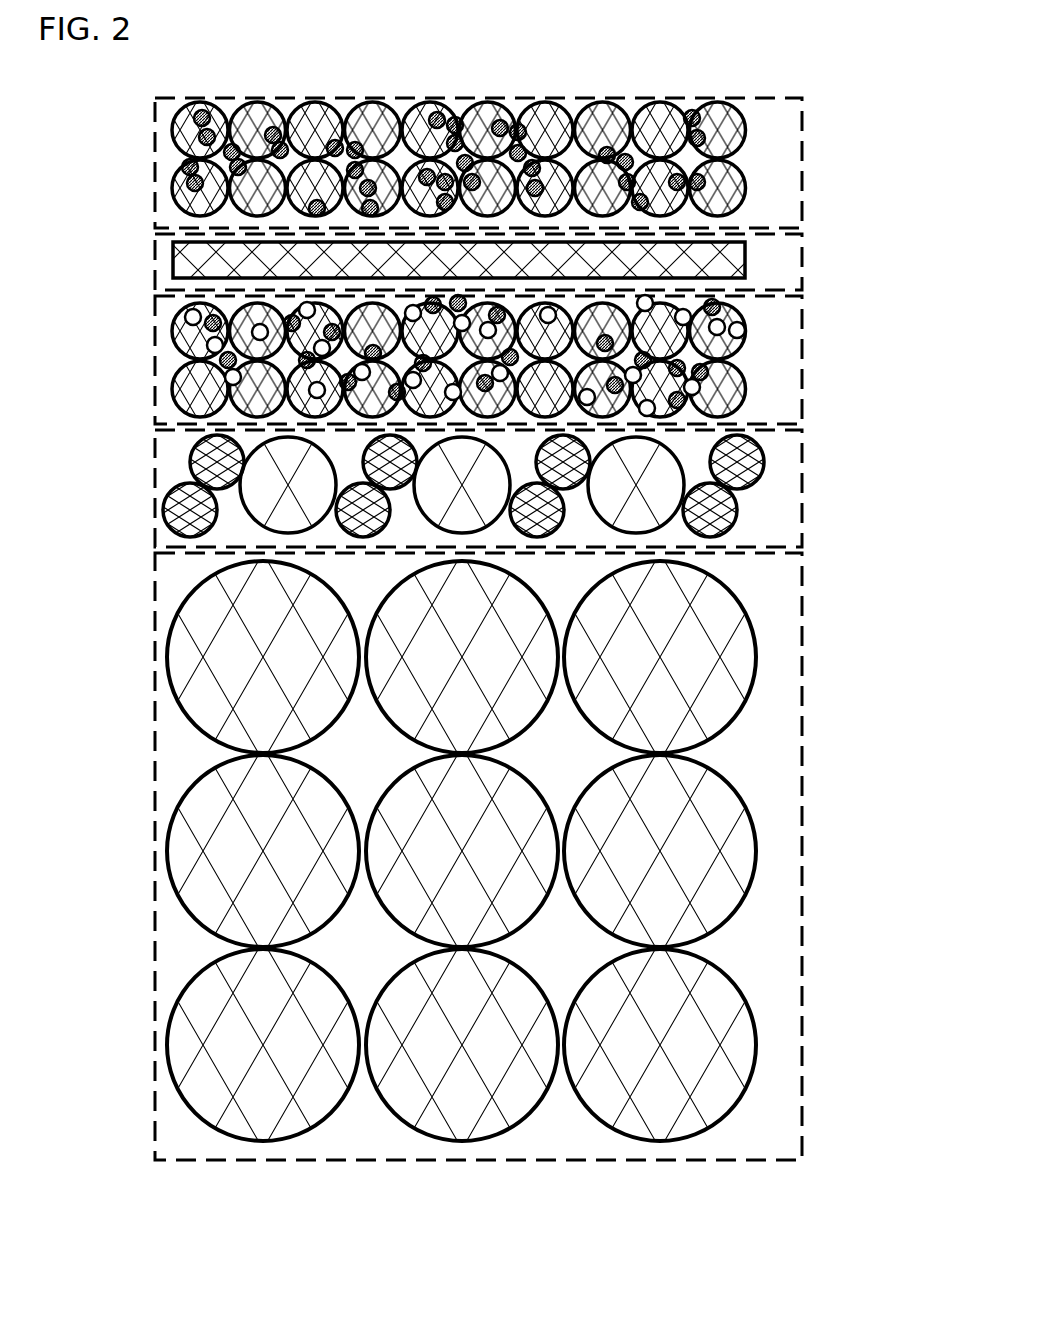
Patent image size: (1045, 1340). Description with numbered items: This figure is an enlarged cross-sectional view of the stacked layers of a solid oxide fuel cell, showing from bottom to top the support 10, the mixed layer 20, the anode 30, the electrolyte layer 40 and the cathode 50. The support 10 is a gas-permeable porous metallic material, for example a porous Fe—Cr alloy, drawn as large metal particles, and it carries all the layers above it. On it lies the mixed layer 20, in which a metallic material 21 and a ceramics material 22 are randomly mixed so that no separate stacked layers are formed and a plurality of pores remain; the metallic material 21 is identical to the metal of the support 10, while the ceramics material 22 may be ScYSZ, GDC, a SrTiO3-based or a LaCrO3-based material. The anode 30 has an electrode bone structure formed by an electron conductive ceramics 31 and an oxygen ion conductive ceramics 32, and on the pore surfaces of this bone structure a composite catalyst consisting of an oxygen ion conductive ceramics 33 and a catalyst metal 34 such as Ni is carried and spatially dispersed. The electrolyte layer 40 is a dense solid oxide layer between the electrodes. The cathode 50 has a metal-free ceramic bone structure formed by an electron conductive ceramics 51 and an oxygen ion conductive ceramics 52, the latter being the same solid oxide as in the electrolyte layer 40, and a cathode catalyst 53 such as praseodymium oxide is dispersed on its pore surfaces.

The support 10 is at (802, 675).
The mixed layer 20 is at (473, 488).
The metallic material 21 is at (266, 488).
The ceramics material 22 is at (755, 460).
The anode 30 is at (501, 359).
The electron conductive ceramics 31 is at (738, 315).
The oxygen ion conductive ceramics 32 is at (738, 387).
The oxygen ion conductive ceramics 33 is at (190, 320).
The catalyst metal 34 is at (195, 372).
The electrolyte layer 40 is at (725, 258).
The cathode 50 is at (502, 163).
The electron conductive ceramics 51 is at (738, 122).
The oxygen ion conductive ceramics 52 is at (738, 190).
The cathode catalyst 53 is at (196, 120).